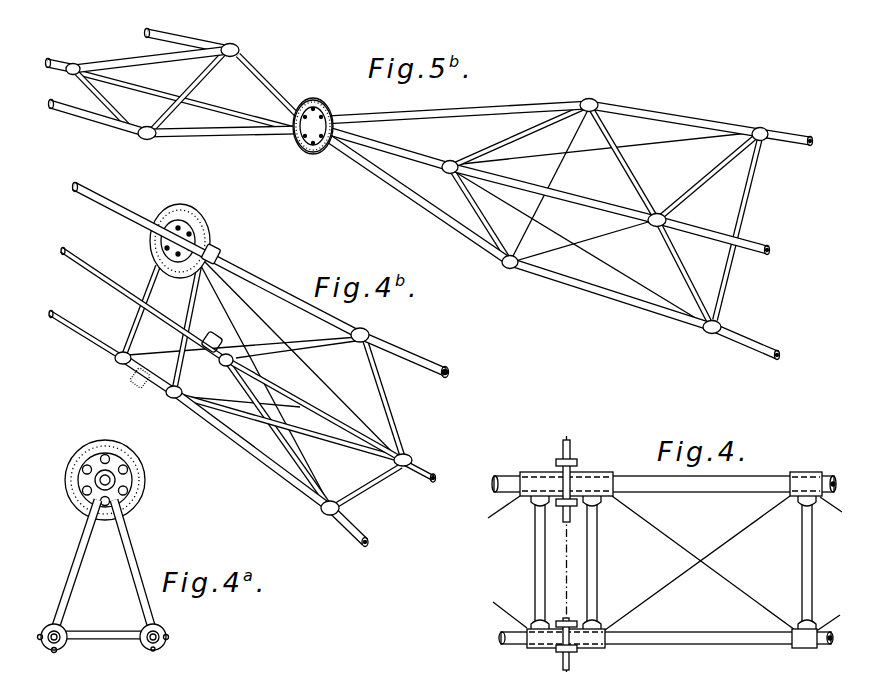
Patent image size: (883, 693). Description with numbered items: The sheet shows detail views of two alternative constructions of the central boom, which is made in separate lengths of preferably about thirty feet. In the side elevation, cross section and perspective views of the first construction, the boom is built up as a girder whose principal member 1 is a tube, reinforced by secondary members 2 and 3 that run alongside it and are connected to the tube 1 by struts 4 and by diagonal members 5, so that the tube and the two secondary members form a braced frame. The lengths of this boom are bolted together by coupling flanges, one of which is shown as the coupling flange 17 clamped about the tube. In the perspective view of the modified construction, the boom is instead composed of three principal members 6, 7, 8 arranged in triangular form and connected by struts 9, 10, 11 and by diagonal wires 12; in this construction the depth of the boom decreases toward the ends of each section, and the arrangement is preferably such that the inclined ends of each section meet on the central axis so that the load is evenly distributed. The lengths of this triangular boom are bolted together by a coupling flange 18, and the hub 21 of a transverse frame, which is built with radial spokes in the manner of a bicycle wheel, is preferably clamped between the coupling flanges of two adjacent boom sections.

In FIG. 4B, the principal member 1 is at (450, 372).
In FIG. 4A, the principal member 1 is at (122, 484).
In FIG. 4, the principal member 1 is at (703, 482).
In FIG. 4B, the secondary member 2 is at (356, 540).
In FIG. 4A, the secondary member 2 is at (56, 649).
In FIG. 4, the secondary member 2 is at (696, 636).
In FIG. 4B, the secondary member 3 is at (420, 482).
In FIG. 4A, the secondary member 3 is at (170, 637).
In FIG. 4B, the struts 4 is at (132, 318).
In FIG. 4A, the struts 4 is at (92, 560).
In FIG. 4, the struts 4 is at (530, 562).
In FIG. 4B, the diagonal members 5 is at (325, 350).
In FIG. 4, the diagonal members 5 is at (735, 532).
In FIG. 5B, the principal member 6 is at (752, 250).
In FIG. 5B, the principal member 7 is at (758, 340).
In FIG. 5B, the principal member 8 is at (805, 148).
In FIG. 5B, the strut 9 is at (724, 180).
In FIG. 5B, the strut 10 is at (680, 255).
In FIG. 5B, the strut 11 is at (742, 222).
In FIG. 5B, the diagonal wires 12 is at (546, 152).
In FIG. 4, the coupling flange 17 is at (560, 458).
In FIG. 5B, the coupling flange 18 is at (296, 148).
In FIG. 5B, the hub 21 is at (312, 99).